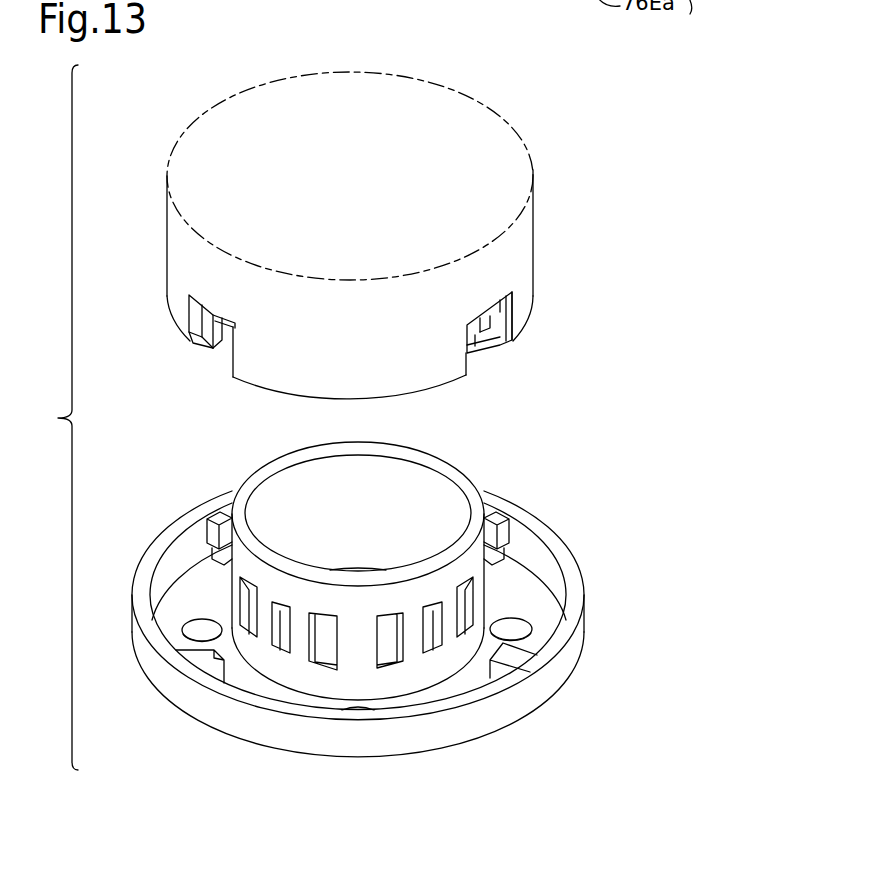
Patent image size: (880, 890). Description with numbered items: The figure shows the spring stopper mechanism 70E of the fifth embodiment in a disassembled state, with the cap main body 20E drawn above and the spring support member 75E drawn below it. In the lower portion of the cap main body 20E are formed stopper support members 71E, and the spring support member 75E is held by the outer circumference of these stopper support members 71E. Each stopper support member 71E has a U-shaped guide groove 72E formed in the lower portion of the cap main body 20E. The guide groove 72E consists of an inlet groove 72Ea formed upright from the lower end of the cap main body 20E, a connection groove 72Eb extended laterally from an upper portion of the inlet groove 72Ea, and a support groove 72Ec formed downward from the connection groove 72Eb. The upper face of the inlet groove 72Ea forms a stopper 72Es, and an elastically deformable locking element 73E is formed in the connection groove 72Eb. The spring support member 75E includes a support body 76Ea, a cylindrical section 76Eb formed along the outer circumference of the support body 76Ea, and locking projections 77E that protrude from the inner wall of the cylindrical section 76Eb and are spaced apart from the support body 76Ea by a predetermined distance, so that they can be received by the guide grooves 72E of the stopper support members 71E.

The cap main body 20E is at (518, 232).
The spring stopper mechanism 70E is at (759, 295).
The stopper support member 71E is at (225, 350).
The guide groove 72E is at (575, 314).
The inlet groove 72Ea is at (507, 313).
The connection groove 72Eb is at (507, 318).
The support groove 72Ec is at (483, 345).
The stopper 72Es is at (507, 308).
The locking element 73E is at (480, 320).
The spring support member 75E is at (423, 599).
The support body 76Ea is at (492, 580).
The cylindrical section 76Eb is at (565, 566).
The locking projection 77E is at (490, 505).